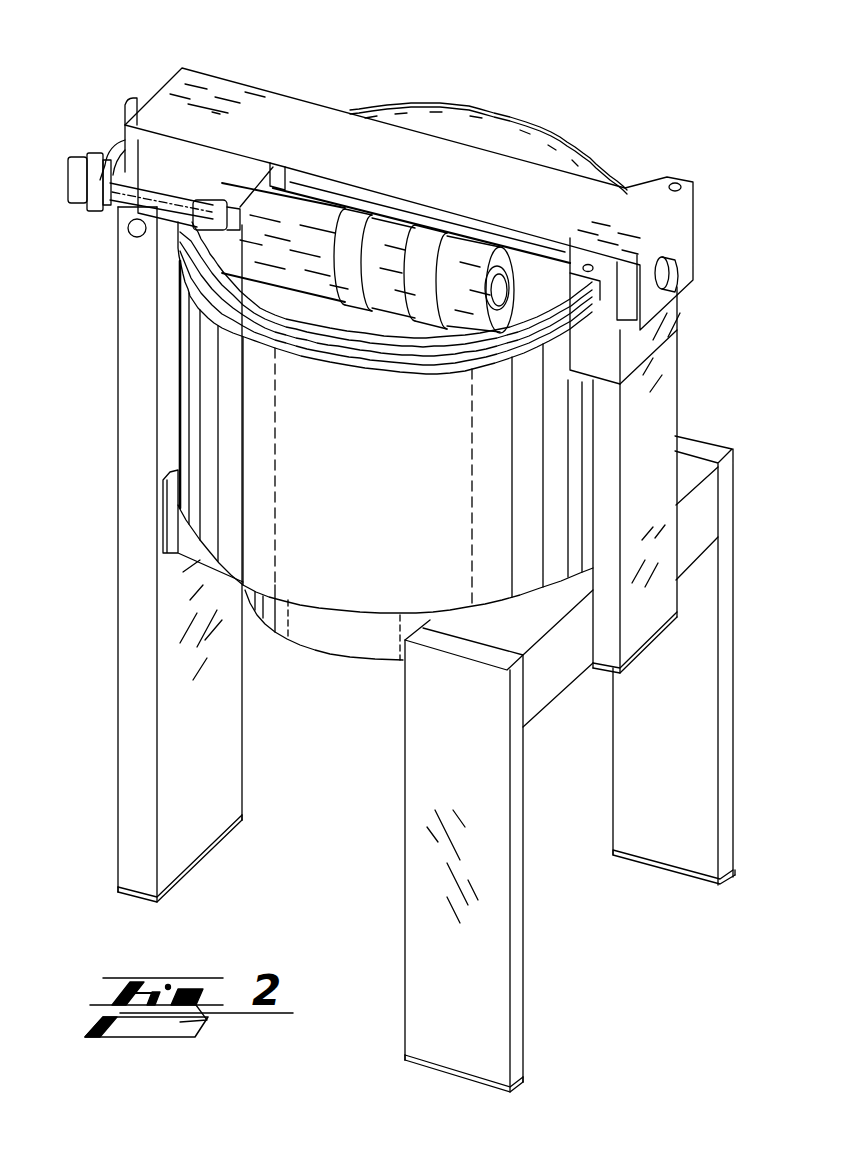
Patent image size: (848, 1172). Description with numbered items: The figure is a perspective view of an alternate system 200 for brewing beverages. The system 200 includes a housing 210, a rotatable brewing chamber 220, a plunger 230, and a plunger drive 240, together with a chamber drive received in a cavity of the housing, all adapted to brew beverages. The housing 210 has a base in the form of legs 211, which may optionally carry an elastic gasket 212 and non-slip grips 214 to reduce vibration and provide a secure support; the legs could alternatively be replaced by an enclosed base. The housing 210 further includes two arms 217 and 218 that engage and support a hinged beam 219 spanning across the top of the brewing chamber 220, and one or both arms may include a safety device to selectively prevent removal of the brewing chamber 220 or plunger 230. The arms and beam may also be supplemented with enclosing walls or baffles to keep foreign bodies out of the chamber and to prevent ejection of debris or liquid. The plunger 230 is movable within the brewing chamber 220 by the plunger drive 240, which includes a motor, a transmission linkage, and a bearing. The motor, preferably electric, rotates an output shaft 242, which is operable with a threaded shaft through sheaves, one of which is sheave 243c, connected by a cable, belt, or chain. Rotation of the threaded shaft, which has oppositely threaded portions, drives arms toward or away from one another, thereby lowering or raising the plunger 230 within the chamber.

The system 200 is at (68, 70).
The housing 210 is at (135, 722).
The legs 211 is at (210, 752).
The elastic gasket 212 is at (177, 510).
The non-slip grips 214 is at (200, 860).
The arm 217 is at (665, 387).
The arm 218 is at (130, 487).
The hinged beam 219 is at (628, 200).
The rotatable brewing chamber 220 is at (197, 427).
The plunger 230 is at (540, 105).
The plunger drive 240 is at (288, 200).
The output shaft 242 is at (122, 203).
The sheave 243c is at (68, 182).